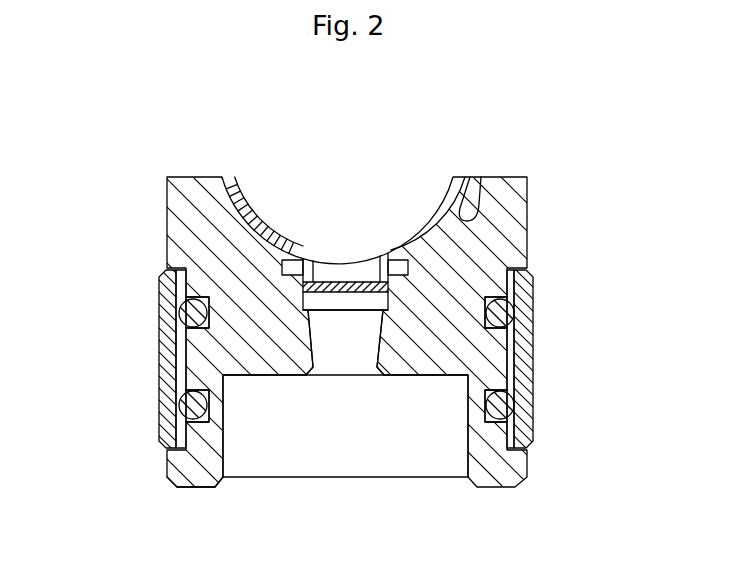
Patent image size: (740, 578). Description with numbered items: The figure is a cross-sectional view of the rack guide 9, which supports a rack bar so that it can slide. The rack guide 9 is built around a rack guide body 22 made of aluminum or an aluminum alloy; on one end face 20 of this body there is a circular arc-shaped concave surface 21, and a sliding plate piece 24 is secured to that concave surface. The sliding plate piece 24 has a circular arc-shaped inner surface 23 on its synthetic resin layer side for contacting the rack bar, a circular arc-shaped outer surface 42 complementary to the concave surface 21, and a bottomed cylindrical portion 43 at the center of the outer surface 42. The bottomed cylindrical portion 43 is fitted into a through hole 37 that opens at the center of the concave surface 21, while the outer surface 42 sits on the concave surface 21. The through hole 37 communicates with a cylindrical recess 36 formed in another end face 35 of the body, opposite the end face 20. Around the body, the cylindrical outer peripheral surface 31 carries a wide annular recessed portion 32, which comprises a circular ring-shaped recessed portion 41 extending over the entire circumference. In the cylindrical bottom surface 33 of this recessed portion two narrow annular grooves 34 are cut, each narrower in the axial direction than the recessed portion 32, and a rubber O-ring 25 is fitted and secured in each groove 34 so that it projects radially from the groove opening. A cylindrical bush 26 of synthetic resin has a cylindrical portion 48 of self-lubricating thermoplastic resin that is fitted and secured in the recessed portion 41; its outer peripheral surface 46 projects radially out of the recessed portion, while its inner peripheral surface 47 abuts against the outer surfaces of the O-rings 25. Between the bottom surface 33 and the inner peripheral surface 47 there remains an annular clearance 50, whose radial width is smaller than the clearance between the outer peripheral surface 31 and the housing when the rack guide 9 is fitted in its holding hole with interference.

The rack guide 9 is at (536, 181).
The one end face 20 is at (192, 176).
The circular arc-shaped concave surface 21 is at (435, 222).
The rack guide body 22 is at (190, 241).
The circular arc-shaped inner surface 23 is at (261, 206).
The sliding plate piece 24 is at (282, 243).
The O-ring 25 is at (192, 312).
The cylindrical bush 26 is at (525, 348).
The cylindrical outer peripheral surface 31 is at (528, 232).
The wide annular recessed portion 32 is at (181, 365).
The cylindrical bottom surface 33 is at (170, 437).
The narrow annular groove 34 is at (533, 294).
The another end face 35 is at (200, 487).
The cylindrical recess 36 is at (402, 468).
The through hole 37 is at (332, 355).
The circular ring-shaped recessed portion 41 is at (517, 377).
The circular arc-shaped outer surface 42 is at (481, 212).
The bottomed cylindrical portion 43 is at (320, 258).
The outer peripheral surface 46 is at (535, 325).
The inner peripheral surface 47 is at (184, 374).
The cylindrical portion 48 is at (166, 330).
The annular clearance 50 is at (511, 362).